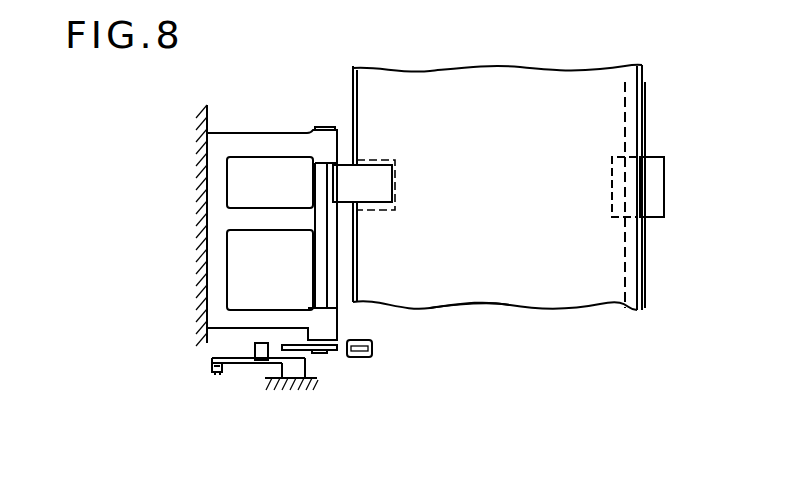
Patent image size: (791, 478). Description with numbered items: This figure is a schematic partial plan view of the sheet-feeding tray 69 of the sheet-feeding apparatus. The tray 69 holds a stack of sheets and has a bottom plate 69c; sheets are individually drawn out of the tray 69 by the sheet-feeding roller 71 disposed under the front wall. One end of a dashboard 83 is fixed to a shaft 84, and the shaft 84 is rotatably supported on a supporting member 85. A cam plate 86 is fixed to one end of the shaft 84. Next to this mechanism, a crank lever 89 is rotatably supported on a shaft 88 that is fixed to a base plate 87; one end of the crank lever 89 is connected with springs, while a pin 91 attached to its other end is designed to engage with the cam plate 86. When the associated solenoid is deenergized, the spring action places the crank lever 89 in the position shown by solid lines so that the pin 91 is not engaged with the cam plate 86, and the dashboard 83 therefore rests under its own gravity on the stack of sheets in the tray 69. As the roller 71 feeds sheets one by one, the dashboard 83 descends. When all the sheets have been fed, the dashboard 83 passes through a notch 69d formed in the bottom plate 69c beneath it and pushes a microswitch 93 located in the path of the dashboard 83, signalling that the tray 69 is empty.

The sheet-feeding tray 69 is at (519, 312).
The bottom plate 69c is at (445, 307).
The notch 69d is at (396, 195).
The sheet-feeding roller 71 is at (664, 200).
The dashboard 83 is at (370, 165).
The shaft 84 is at (327, 275).
The supporting member 85 is at (268, 133).
The cam plate 86 is at (333, 353).
The base plate 87 is at (288, 390).
The shaft 88 is at (312, 356).
The crank lever 89 is at (237, 365).
The pin 91 is at (255, 350).
The microswitch 93 is at (372, 353).